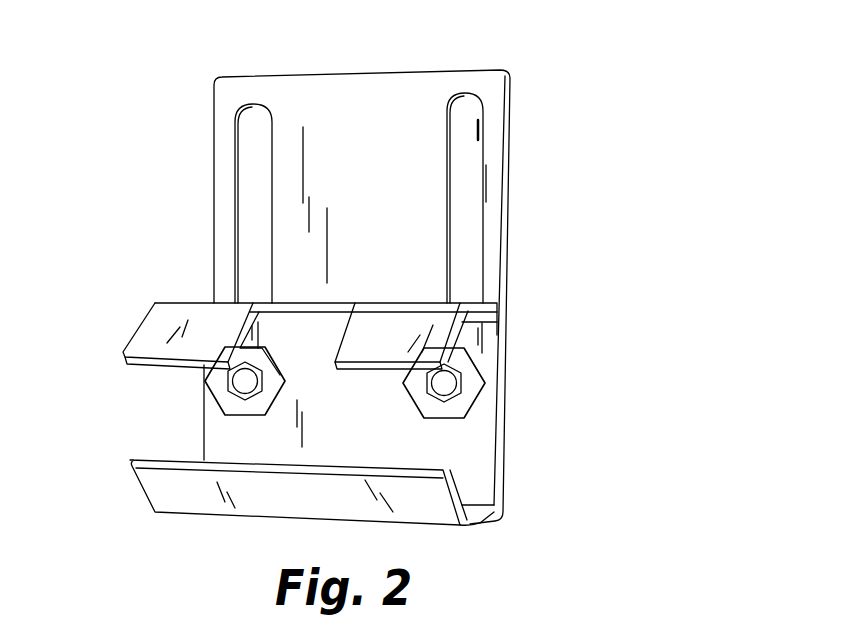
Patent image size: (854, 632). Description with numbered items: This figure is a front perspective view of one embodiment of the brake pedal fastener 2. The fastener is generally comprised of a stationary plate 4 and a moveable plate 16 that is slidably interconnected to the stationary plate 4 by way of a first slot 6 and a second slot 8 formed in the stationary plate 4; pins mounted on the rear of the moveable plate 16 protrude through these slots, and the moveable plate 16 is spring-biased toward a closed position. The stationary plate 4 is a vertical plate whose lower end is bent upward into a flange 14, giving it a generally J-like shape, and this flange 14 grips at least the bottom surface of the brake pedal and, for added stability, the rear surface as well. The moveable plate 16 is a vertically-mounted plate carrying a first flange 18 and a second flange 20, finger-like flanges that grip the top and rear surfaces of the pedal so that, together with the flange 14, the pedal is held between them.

The brake pedal fastener 2 is at (113, 278).
The stationary plate 4 is at (443, 70).
The first slot 6 is at (483, 200).
The second slot 8 is at (272, 125).
The flange 14 is at (450, 483).
The moveable plate 16 is at (433, 303).
The first flange 18 is at (455, 340).
The second flange 20 is at (132, 335).